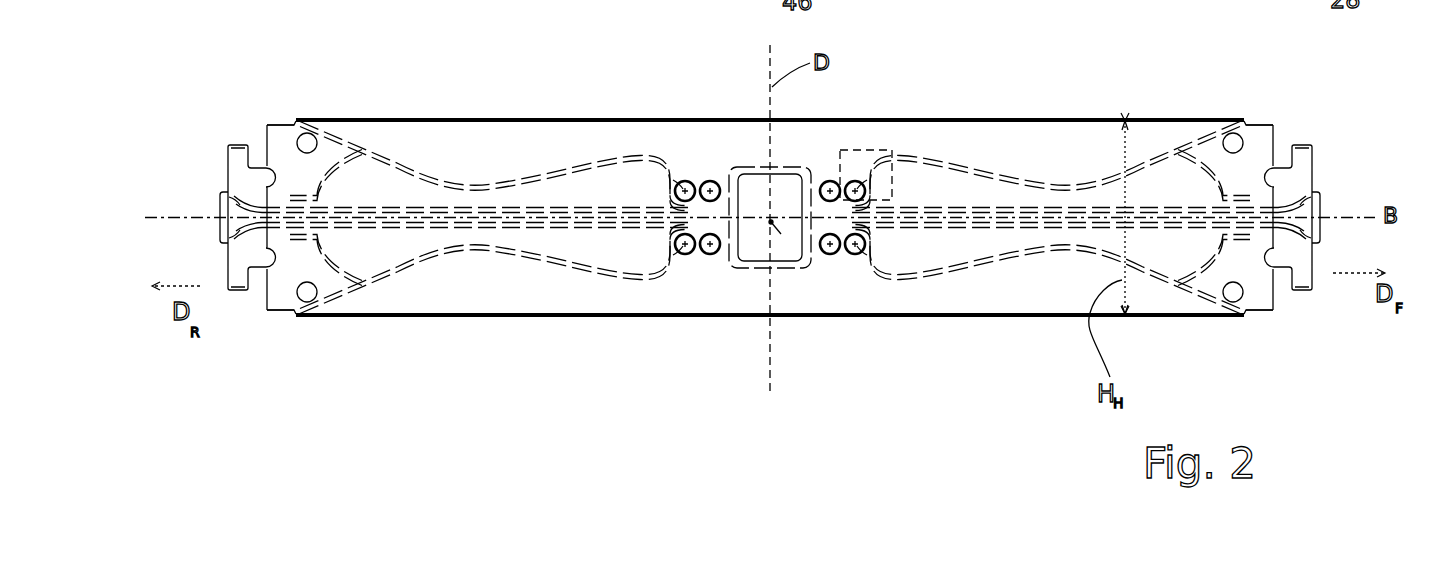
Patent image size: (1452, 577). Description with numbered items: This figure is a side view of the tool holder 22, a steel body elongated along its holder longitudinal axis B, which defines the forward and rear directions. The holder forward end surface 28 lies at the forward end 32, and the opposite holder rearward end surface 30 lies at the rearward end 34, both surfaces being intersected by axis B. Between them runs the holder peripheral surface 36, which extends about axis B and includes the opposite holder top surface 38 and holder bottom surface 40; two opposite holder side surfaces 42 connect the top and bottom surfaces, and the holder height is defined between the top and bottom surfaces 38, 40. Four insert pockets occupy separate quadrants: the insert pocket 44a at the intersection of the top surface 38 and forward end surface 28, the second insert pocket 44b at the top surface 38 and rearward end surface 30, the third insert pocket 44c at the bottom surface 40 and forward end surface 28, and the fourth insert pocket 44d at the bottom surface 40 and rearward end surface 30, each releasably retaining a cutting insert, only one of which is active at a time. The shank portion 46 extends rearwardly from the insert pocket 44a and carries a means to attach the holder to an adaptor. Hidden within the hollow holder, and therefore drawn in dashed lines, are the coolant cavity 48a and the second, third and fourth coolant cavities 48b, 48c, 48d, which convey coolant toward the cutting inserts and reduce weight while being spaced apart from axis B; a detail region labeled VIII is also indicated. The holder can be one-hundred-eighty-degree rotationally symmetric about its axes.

The tool holder 22 is at (417, 75).
The holder forward end surface 28 is at (1312, 162).
The holder rearward end surface 30 is at (227, 182).
The forward end 32 is at (1362, 192).
The rearward end 34 is at (145, 188).
The holder peripheral surface 36 is at (707, 133).
The holder top surface 38 is at (925, 118).
The holder bottom surface 40 is at (935, 318).
The holder side surfaces 42 is at (720, 292).
The insert pocket 44a is at (1290, 118).
The second insert pocket 44b is at (250, 122).
The third insert pocket 44c is at (1288, 300).
The fourth insert pocket 44d is at (253, 317).
The shank portion 46 is at (828, 363).
The coolant cavity 48a is at (940, 188).
The second coolant cavity 48b is at (620, 185).
The third coolant cavity 48c is at (993, 243).
The fourth coolant cavity 48d is at (615, 255).
The detail view region VIII is at (885, 150).